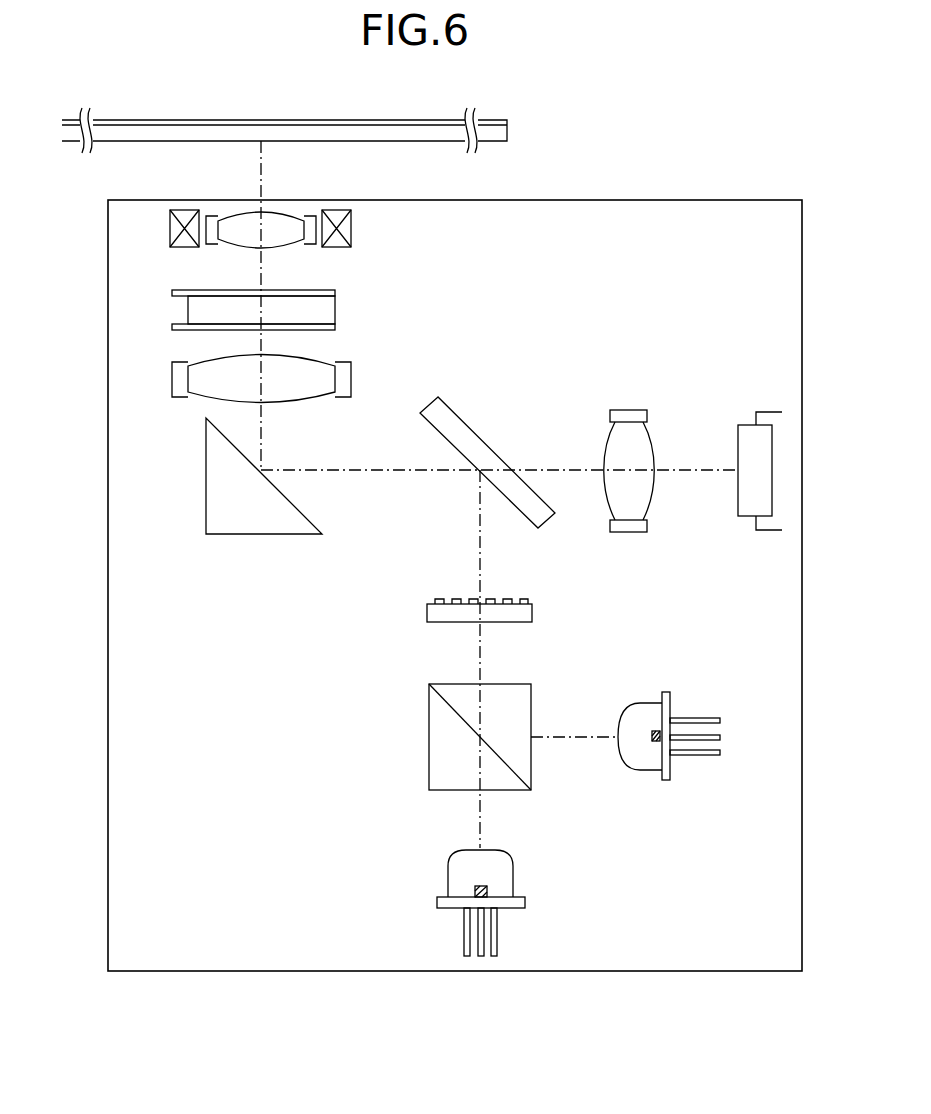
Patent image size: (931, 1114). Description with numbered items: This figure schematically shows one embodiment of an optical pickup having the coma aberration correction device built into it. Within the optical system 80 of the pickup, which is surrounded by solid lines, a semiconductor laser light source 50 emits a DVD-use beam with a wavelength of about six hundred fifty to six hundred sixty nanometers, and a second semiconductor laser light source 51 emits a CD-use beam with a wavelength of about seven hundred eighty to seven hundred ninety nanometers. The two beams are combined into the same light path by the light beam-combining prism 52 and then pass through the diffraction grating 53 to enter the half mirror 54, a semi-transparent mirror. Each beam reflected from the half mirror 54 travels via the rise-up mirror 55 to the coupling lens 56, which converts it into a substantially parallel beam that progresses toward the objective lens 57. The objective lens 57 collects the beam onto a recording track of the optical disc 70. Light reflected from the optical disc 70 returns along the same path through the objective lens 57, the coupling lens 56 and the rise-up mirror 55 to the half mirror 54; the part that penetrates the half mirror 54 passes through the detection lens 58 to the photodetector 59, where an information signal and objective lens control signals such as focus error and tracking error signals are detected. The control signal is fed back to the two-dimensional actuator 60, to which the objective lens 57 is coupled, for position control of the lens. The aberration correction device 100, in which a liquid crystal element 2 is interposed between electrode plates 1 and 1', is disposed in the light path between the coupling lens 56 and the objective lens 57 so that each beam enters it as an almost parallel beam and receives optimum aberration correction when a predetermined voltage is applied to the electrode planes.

The optical system 80 is at (105, 806).
The optical disc 70 is at (508, 130).
The two-dimensional actuator 60 is at (352, 228).
The objective lens 57 is at (270, 250).
The aberration correction device 100 is at (268, 313).
The electrode plate 1 is at (231, 280).
The liquid crystal element 2 is at (188, 309).
The electrode plate 1' is at (227, 342).
The coupling lens 56 is at (352, 368).
The rise-up mirror 55 is at (236, 535).
The half mirror 54 is at (455, 410).
The detection lens 58 is at (630, 410).
The photodetector 59 is at (737, 500).
The diffraction grating 53 is at (533, 612).
The light beam-combining prism 52 is at (429, 745).
The semiconductor laser light source 51 is at (640, 703).
The semiconductor laser light source 50 is at (515, 873).